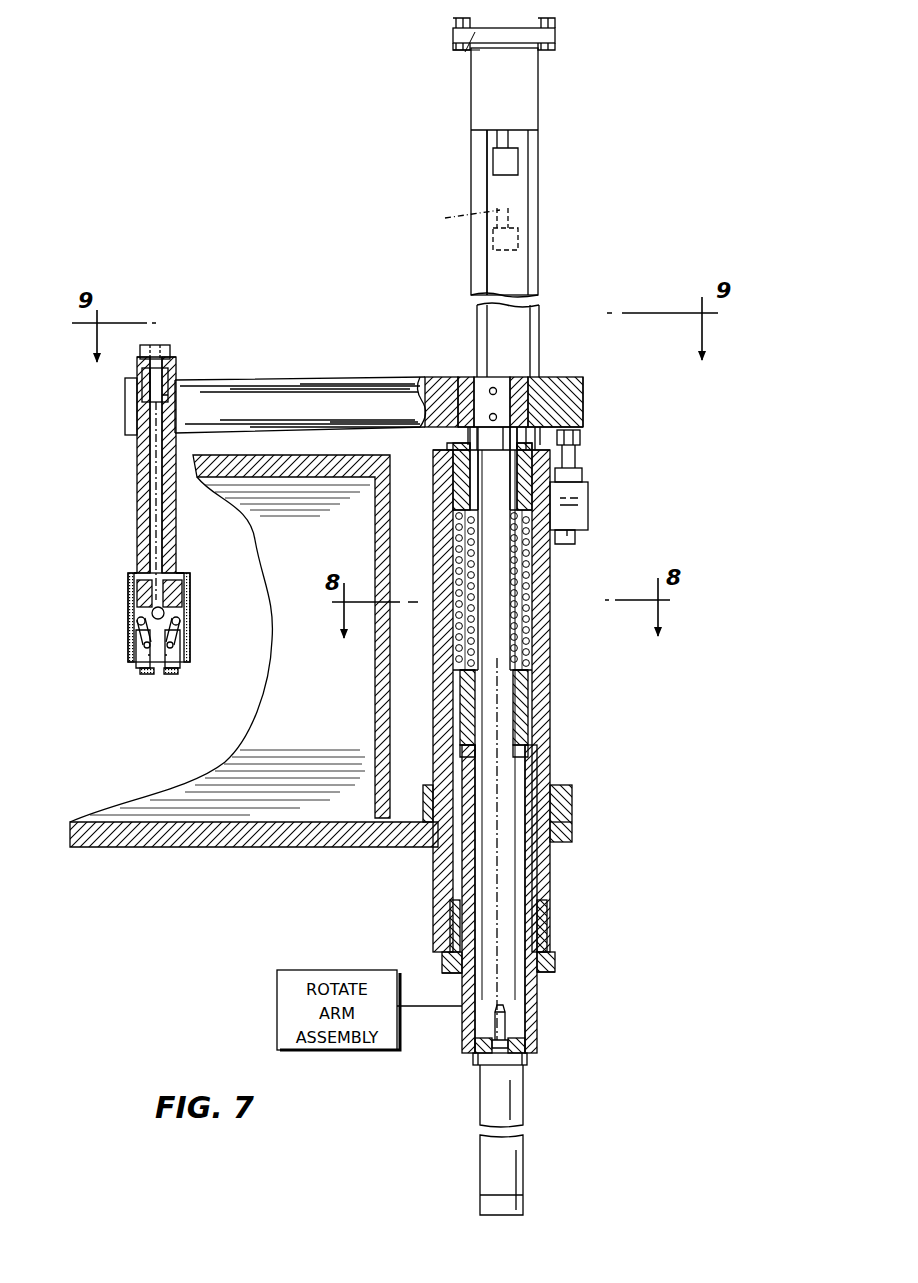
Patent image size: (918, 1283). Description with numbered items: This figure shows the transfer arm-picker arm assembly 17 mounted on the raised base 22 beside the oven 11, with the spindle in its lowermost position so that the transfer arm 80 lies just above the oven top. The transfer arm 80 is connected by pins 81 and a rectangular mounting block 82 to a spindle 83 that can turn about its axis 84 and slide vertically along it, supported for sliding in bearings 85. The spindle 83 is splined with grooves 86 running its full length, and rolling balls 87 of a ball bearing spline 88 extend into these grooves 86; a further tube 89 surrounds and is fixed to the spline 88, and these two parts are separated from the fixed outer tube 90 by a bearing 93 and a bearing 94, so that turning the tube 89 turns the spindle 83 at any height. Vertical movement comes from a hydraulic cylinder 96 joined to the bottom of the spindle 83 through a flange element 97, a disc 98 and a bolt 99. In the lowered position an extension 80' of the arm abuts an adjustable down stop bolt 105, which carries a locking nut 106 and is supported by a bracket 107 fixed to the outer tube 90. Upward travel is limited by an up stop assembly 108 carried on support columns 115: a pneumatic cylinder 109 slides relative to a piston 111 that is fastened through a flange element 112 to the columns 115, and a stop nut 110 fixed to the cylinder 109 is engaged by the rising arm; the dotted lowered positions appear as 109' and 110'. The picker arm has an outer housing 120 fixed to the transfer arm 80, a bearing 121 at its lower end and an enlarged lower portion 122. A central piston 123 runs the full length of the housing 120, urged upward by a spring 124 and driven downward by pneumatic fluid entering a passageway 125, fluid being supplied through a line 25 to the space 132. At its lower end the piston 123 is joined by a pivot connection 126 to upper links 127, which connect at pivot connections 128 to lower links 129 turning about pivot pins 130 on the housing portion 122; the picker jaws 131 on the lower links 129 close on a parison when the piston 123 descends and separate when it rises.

The oven 11 is at (375, 696).
The transfer arm-picker arm assembly 17 is at (592, 418).
The raised base 22 is at (572, 832).
The line 25 is at (437, 595).
The transfer arm 80 is at (316, 390).
The extension of the transfer arm 80' is at (604, 398).
The pins 81 is at (490, 388).
The rectangular mounting block 82 is at (518, 377).
The spindle 83 is at (504, 622).
The axis 84 is at (497, 870).
The bearings 85 is at (466, 492).
The grooves 86 is at (510, 782).
The rolling balls 87 is at (522, 585).
The ball bearing spline 88 is at (532, 608).
The further tube 89 is at (545, 458).
The outer tube 90 is at (550, 678).
The bearing 93 is at (440, 482).
The bearing 94 is at (455, 922).
The hydraulic cylinder 96 is at (523, 1153).
The flange element 97 is at (527, 1060).
The disc 98 is at (518, 1030).
The bolt 99 is at (498, 1005).
The adjustable down stop bolt 105 is at (580, 437).
The adjusting nut 106 is at (582, 472).
The bracket 107 is at (588, 503).
The up stop assembly 108 is at (505, 157).
The pneumatic cylinder 109 is at (540, 172).
The lowered position of the pneumatic cylinder 109' is at (457, 221).
The stop nut 110 is at (471, 159).
The lowered position of the stop nut 110' is at (541, 236).
The piston 111 is at (472, 48).
The flange element 112 is at (460, 35).
The support columns 115 is at (538, 213).
The outer housing 120 is at (176, 536).
The bearing 121 is at (190, 584).
The enlarged lower portion 122 is at (190, 605).
The central piston 123 is at (168, 396).
The spring 124 is at (172, 545).
The passageway 125 is at (155, 342).
The pivot connection 126 is at (153, 608).
The upper links 127 is at (137, 620).
The pivot connections 128 is at (138, 628).
The lower links 129 is at (136, 648).
The pivot pins 130 is at (144, 648).
The picker jaws 131 is at (145, 675).
The space 132 is at (140, 382).